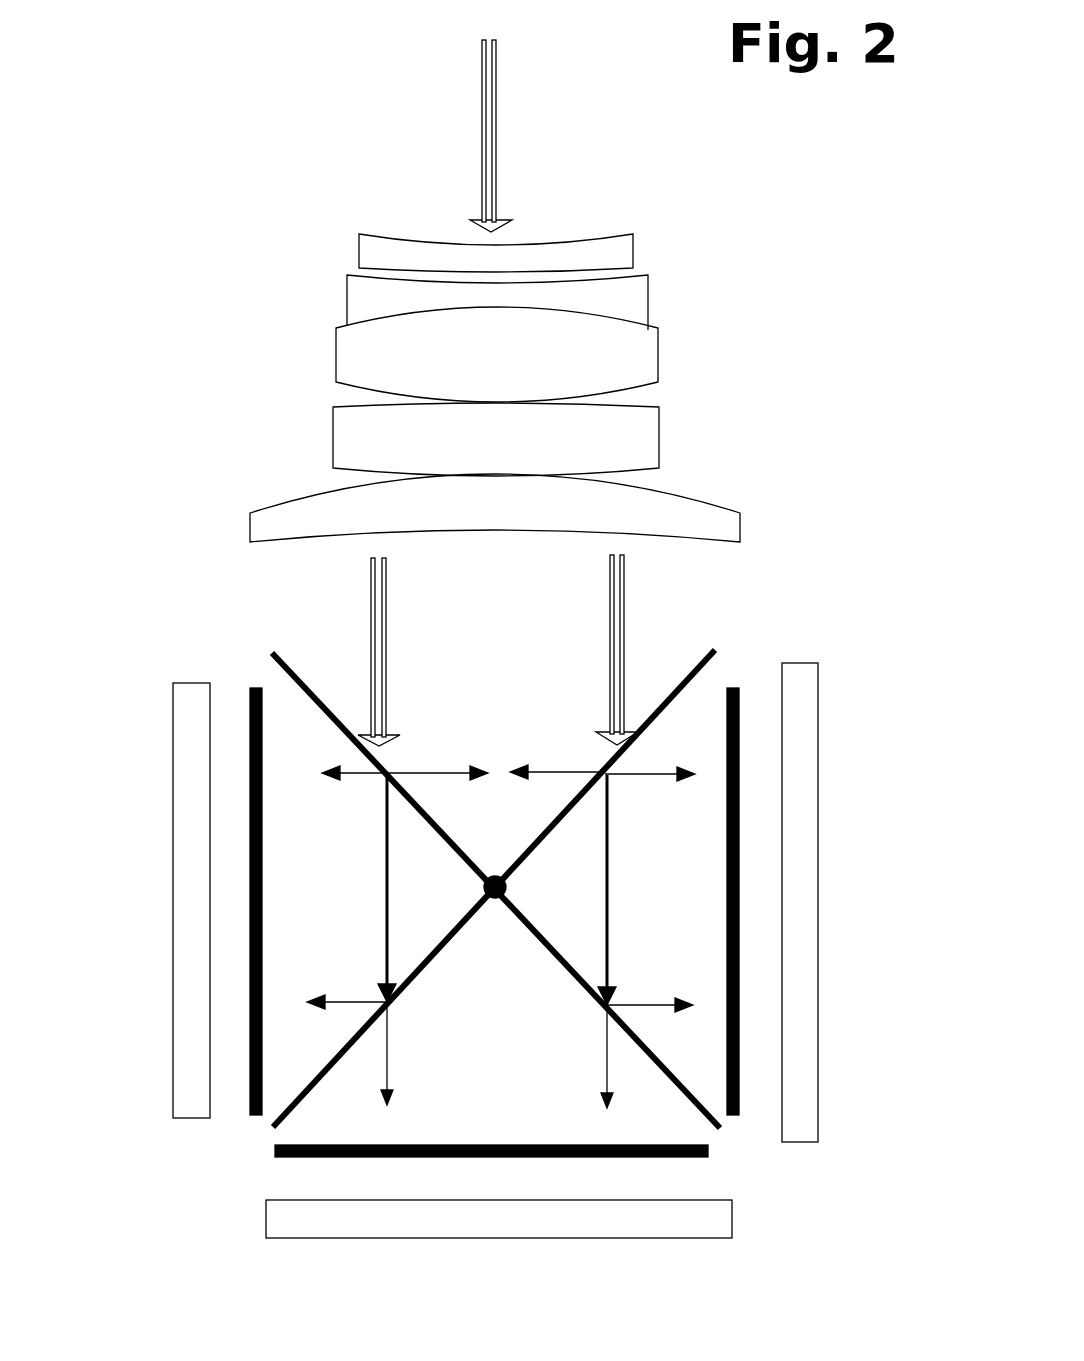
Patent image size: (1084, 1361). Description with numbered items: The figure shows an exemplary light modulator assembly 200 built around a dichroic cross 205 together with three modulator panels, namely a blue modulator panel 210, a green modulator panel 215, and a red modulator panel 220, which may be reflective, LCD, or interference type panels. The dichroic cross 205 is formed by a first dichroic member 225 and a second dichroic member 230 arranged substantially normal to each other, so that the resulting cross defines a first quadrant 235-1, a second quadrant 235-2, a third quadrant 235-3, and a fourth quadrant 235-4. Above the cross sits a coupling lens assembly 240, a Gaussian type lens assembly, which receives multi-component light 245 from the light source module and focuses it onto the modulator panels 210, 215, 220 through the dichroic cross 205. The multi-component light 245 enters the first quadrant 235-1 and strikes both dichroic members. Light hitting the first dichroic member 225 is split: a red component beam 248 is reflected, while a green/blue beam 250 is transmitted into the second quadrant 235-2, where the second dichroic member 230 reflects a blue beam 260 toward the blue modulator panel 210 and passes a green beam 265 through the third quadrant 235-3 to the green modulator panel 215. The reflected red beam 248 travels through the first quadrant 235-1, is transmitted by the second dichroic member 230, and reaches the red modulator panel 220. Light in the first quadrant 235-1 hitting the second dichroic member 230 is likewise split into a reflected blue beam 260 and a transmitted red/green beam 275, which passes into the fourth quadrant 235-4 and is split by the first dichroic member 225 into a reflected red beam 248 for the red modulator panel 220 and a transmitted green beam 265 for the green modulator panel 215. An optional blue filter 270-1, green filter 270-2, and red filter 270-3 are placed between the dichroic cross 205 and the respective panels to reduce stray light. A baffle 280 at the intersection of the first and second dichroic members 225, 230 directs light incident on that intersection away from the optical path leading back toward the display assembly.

The light modulator assembly 200 is at (207, 250).
The dichroic cross 205 is at (272, 648).
The blue modulator panel 210 is at (173, 900).
The green modulator panel 215 is at (508, 1238).
The red modulator panel 220 is at (818, 882).
The first dichroic member 225 is at (306, 682).
The second dichroic member 230 is at (671, 695).
The first quadrant 235-1 is at (475, 664).
The second quadrant 235-2 is at (395, 897).
The third quadrant 235-3 is at (465, 950).
The fourth quadrant 235-4 is at (525, 897).
The coupling lens assembly 240 is at (677, 353).
The multi-component light 245 is at (497, 143).
The red component beam 248 is at (422, 771).
The green/blue beam 250 is at (385, 908).
The blue beam 260 is at (360, 777).
The green beam 265 is at (389, 1030).
The blue filter 270-1 is at (249, 1095).
The green filter 270-2 is at (709, 1150).
The red filter 270-3 is at (728, 688).
The red/green beam 275 is at (610, 865).
The baffle 280 is at (490, 877).